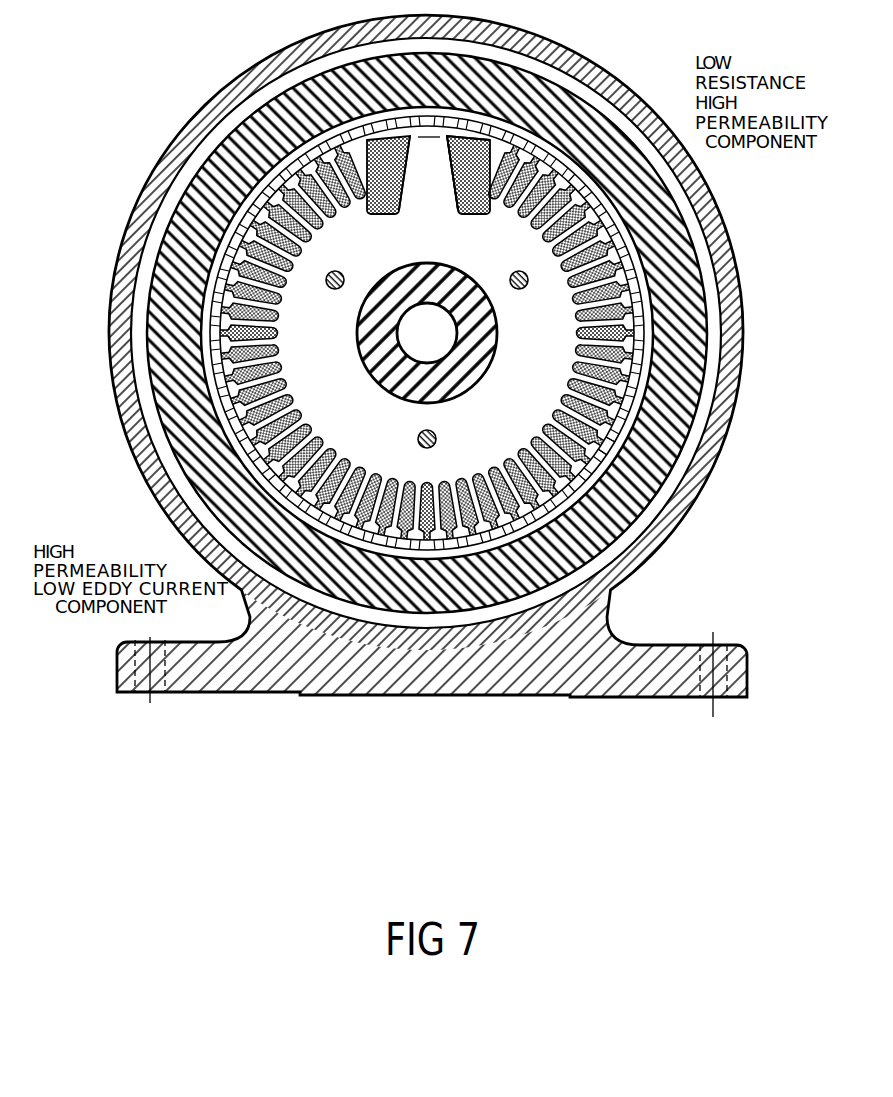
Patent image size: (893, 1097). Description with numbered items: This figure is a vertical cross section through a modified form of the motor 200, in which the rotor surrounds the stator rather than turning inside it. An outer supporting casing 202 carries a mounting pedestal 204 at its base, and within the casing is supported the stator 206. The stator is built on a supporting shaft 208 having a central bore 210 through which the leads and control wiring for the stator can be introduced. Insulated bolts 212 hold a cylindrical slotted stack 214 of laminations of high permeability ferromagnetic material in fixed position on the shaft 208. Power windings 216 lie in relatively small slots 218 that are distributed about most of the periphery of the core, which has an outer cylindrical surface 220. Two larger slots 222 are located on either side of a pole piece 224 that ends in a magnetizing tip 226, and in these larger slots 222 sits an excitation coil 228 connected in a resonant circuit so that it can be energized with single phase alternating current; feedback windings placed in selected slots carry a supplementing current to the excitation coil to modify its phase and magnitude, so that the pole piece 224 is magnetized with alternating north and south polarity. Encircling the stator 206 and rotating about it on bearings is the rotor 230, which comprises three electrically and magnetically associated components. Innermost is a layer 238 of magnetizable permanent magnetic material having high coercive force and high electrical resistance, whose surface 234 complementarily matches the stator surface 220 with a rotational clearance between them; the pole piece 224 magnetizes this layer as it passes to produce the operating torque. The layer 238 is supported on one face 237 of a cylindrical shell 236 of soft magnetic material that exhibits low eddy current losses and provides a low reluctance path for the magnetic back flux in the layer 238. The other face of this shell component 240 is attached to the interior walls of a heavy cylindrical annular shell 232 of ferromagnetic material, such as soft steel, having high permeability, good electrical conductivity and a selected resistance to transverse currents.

The motor 200 is at (82, 387).
The outer supporting casing 202 is at (133, 419).
The mounting pedestal 204 is at (187, 684).
The stator 206 is at (560, 388).
The supporting shaft 208 is at (483, 355).
The central bore 210 is at (452, 334).
The insulated bolts 212 is at (512, 293).
The cylindrical slotted stack of laminations 214 is at (588, 464).
The power windings 216 is at (282, 230).
The small slots 218 is at (260, 291).
The outer cylindrical surface 220 is at (530, 485).
The larger slots 222 is at (467, 212).
The pole piece 224 is at (424, 163).
The magnetizing tip 226 is at (446, 142).
The excitation coil 228 is at (487, 213).
The rotor 230 is at (253, 123).
The heavy cylindrical annular shell 232 is at (645, 203).
The surface of permanent magnet layer 234 is at (609, 445).
The cylindrical shell of soft magnetic material 236 is at (236, 442).
The face of cylindrical shell 237 is at (214, 260).
The layer of magnetizable permanent magnetic material 238 is at (558, 495).
The shell component 240 is at (235, 214).